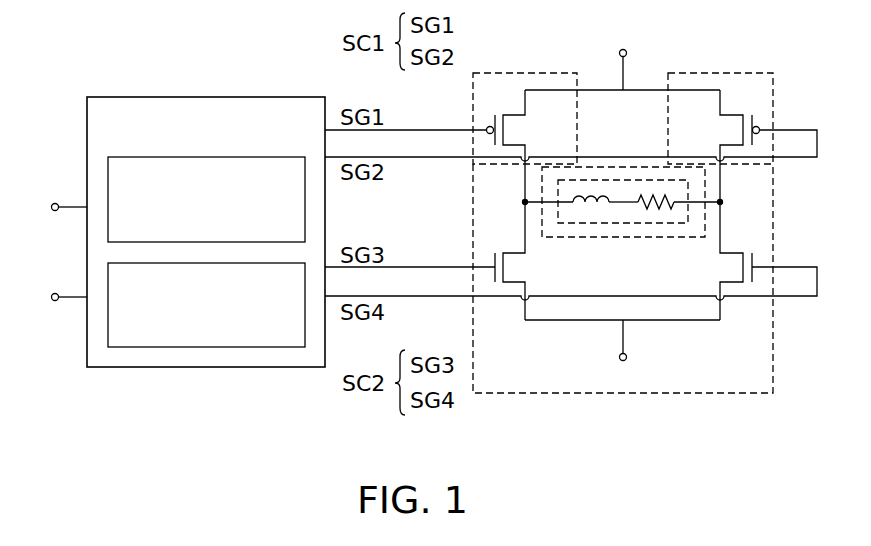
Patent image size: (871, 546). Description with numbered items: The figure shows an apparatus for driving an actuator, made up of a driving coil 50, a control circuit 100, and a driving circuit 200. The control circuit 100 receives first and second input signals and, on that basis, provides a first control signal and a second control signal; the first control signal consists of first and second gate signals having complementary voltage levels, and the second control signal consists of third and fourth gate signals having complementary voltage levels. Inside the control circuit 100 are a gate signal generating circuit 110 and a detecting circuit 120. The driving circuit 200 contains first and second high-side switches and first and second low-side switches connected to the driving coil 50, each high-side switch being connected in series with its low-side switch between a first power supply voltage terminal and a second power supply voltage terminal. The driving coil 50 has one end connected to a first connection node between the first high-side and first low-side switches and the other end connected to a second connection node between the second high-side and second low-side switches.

The control circuit 100 is at (128, 96).
The gate signal generating circuit 110 is at (287, 156).
The detecting circuit 120 is at (276, 349).
The driving coil 50 is at (620, 178).
The driving circuit 200 is at (623, 239).